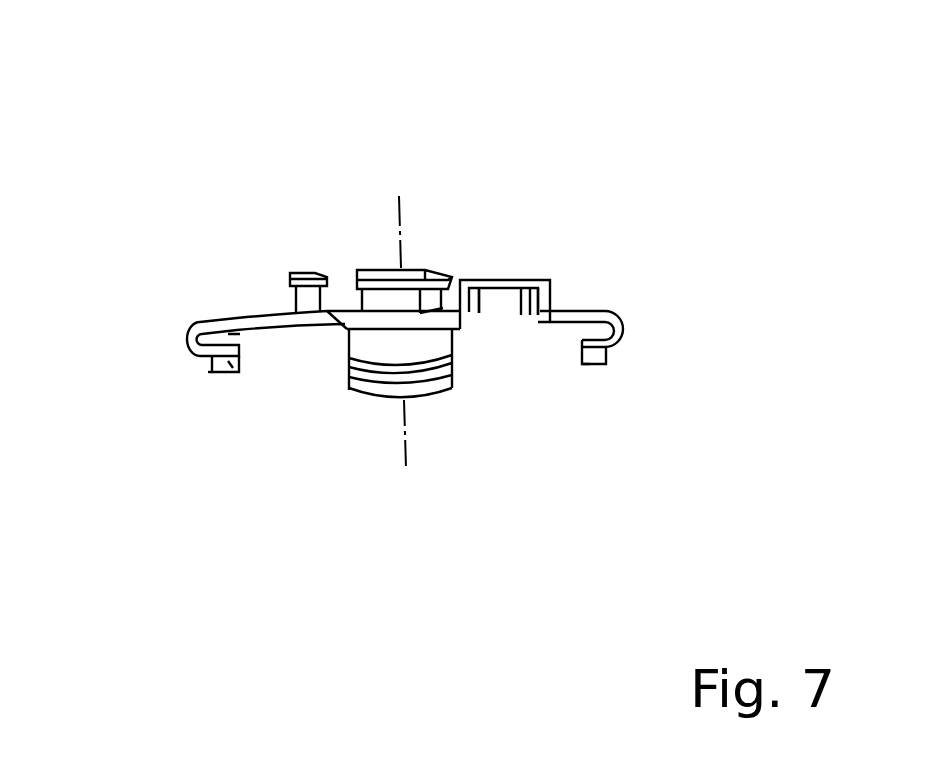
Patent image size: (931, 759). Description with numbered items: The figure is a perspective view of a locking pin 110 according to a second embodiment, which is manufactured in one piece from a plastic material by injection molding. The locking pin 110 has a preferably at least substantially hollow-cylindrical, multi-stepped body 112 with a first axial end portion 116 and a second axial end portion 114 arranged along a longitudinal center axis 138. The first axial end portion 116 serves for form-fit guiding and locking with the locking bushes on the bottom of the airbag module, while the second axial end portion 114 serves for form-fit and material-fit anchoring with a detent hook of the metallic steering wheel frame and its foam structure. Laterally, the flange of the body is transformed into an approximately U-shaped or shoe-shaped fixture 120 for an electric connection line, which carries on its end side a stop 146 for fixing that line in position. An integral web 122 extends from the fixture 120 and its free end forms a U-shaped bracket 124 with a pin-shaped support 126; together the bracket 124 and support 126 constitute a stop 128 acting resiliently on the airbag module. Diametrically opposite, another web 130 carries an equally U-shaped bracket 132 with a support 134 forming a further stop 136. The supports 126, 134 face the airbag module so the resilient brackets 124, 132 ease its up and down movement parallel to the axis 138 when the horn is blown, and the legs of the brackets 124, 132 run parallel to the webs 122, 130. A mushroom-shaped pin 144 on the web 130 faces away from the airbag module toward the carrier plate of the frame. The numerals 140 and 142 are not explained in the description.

The locking pin 110 is at (590, 182).
The body 112 is at (430, 350).
The second axial end portion 114 is at (438, 433).
The first axial end portion 116 is at (440, 228).
The fixture 120 is at (500, 279).
The web 122 is at (578, 310).
The bracket 124 is at (640, 325).
The support 126 is at (605, 352).
The stop 128 is at (597, 383).
The web 130 is at (252, 312).
The bracket 132 is at (180, 339).
The support 134 is at (232, 372).
The stop 136 is at (190, 386).
The longitudinal center axis 138 is at (395, 215).
The space inside right fold 140 is at (588, 328).
The fastening points on plate 142 is at (237, 336).
The pin 144 is at (300, 262).
The stop 146 is at (481, 312).